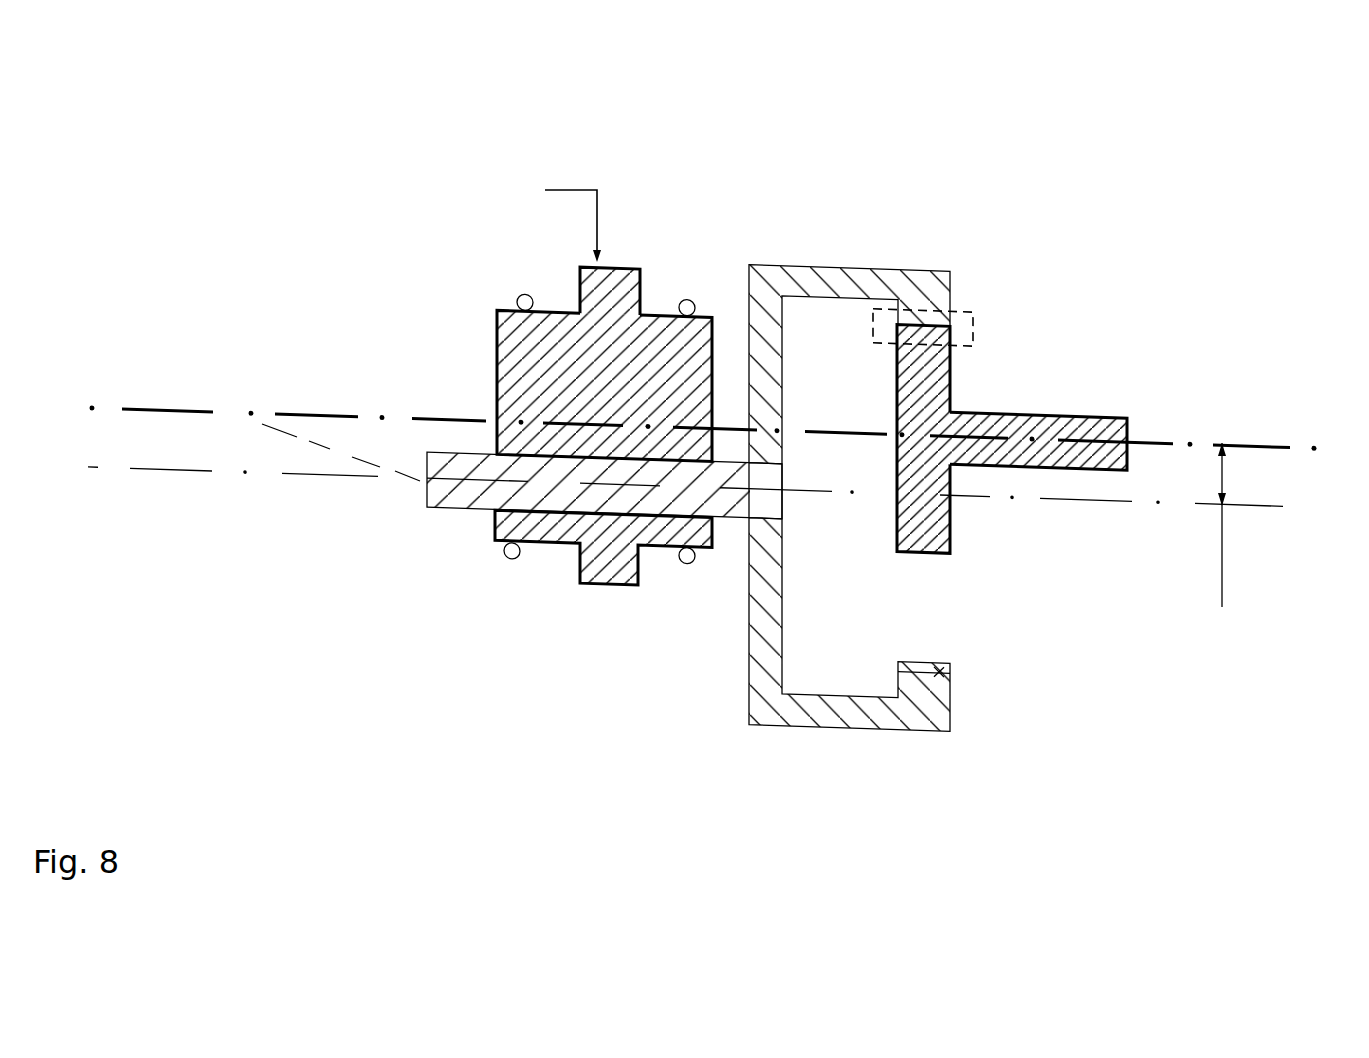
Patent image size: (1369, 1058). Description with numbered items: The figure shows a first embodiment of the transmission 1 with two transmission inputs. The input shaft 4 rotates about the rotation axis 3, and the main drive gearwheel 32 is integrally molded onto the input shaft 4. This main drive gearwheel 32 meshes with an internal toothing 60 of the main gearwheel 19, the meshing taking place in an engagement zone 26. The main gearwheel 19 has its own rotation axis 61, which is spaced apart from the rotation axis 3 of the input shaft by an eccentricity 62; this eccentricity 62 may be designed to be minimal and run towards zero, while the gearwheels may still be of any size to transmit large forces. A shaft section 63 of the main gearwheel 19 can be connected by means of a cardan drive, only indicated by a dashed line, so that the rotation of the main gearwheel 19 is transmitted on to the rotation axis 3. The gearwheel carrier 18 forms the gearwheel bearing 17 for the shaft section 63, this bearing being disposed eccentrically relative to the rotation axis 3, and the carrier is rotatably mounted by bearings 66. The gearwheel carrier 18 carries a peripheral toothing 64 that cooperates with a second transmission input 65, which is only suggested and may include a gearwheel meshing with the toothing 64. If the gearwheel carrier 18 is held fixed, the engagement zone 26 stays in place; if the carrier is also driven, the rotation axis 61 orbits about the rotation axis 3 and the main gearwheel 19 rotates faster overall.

The pump assembly 1 is at (727, 417).
The rotation axis 3 is at (1243, 445).
The input shaft 4 is at (1073, 415).
The gearwheel bearing 17 is at (497, 450).
The gearwheel carrier 18 is at (523, 370).
The main gearwheel 19 is at (768, 647).
The engagement zone 26 is at (953, 313).
The main drive gearwheel 32 is at (926, 368).
The internal toothing 60 is at (945, 673).
The rotation axis 61 is at (173, 470).
The eccentricity 62 is at (1198, 533).
The shaft section 63 is at (457, 500).
The peripheral toothing 64 is at (607, 267).
The second transmission input 65 is at (520, 202).
The bearings 66 is at (507, 563).